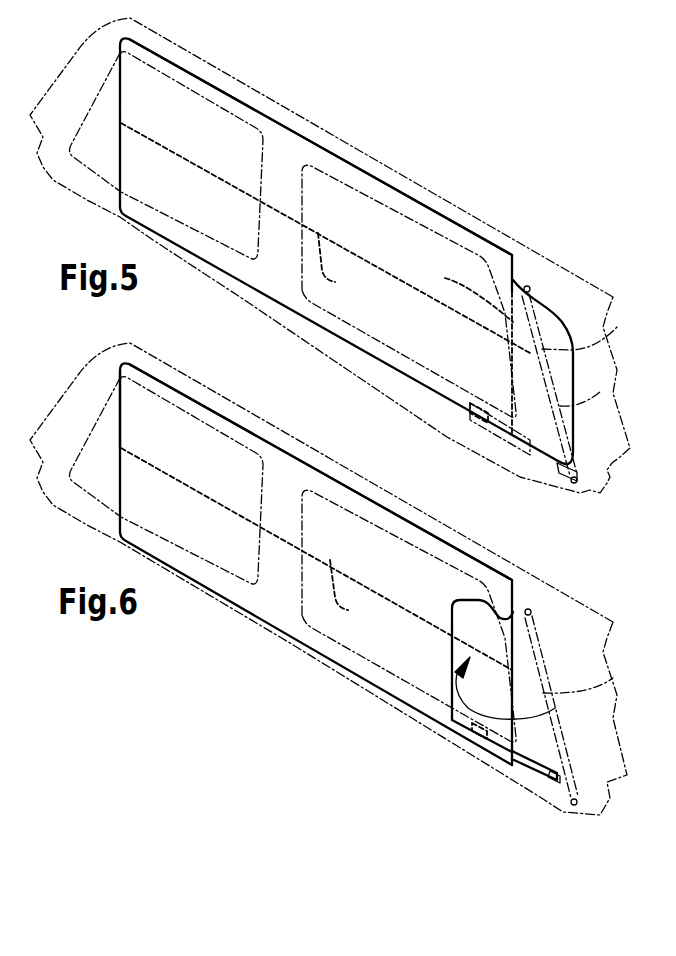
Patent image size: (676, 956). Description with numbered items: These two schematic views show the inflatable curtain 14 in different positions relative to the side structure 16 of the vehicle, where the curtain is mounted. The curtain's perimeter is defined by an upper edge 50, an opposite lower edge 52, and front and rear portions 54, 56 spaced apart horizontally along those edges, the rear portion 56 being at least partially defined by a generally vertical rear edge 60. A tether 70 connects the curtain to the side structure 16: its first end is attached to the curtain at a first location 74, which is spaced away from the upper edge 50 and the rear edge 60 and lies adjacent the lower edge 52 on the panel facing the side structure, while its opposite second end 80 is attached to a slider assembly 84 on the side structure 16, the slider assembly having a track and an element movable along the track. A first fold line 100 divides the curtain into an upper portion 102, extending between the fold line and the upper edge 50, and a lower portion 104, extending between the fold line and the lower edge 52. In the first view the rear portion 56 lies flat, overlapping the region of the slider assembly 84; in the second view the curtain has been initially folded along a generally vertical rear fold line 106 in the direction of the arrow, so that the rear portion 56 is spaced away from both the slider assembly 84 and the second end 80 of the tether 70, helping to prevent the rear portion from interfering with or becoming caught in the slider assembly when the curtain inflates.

In FIG. 5, the inflatable curtain 14 is at (283, 160).
In FIG. 6, the inflatable curtain 14 is at (293, 560).
In FIG. 5, the side structure 16 is at (368, 157).
In FIG. 6, the side structure 16 is at (328, 579).
In FIG. 5, the upper edge 50 is at (410, 193).
In FIG. 6, the upper edge 50 is at (316, 564).
In FIG. 5, the lower edge 52 is at (307, 320).
In FIG. 6, the lower edge 52 is at (316, 648).
In FIG. 6, the front portion 54 is at (97, 466).
In FIG. 5, the rear portion 56 is at (536, 338).
In FIG. 6, the rear portion 56 is at (464, 693).
In FIG. 5, the rear edge 60 is at (587, 400).
In FIG. 5, the tether 70 is at (520, 440).
In FIG. 6, the tether 70 is at (508, 771).
In FIG. 5, the first location 74 is at (468, 413).
In FIG. 6, the second end 80 is at (534, 807).
In FIG. 5, the slider assembly 84 is at (610, 333).
In FIG. 6, the slider assembly 84 is at (587, 707).
In FIG. 5, the first fold line 100 is at (330, 276).
In FIG. 6, the first fold line 100 is at (316, 559).
In FIG. 5, the upper portion 102 is at (213, 130).
In FIG. 6, the upper portion 102 is at (320, 472).
In FIG. 5, the lower portion 104 is at (218, 225).
In FIG. 6, the lower portion 104 is at (170, 551).
In FIG. 5, the rear fold line 106 is at (478, 300).